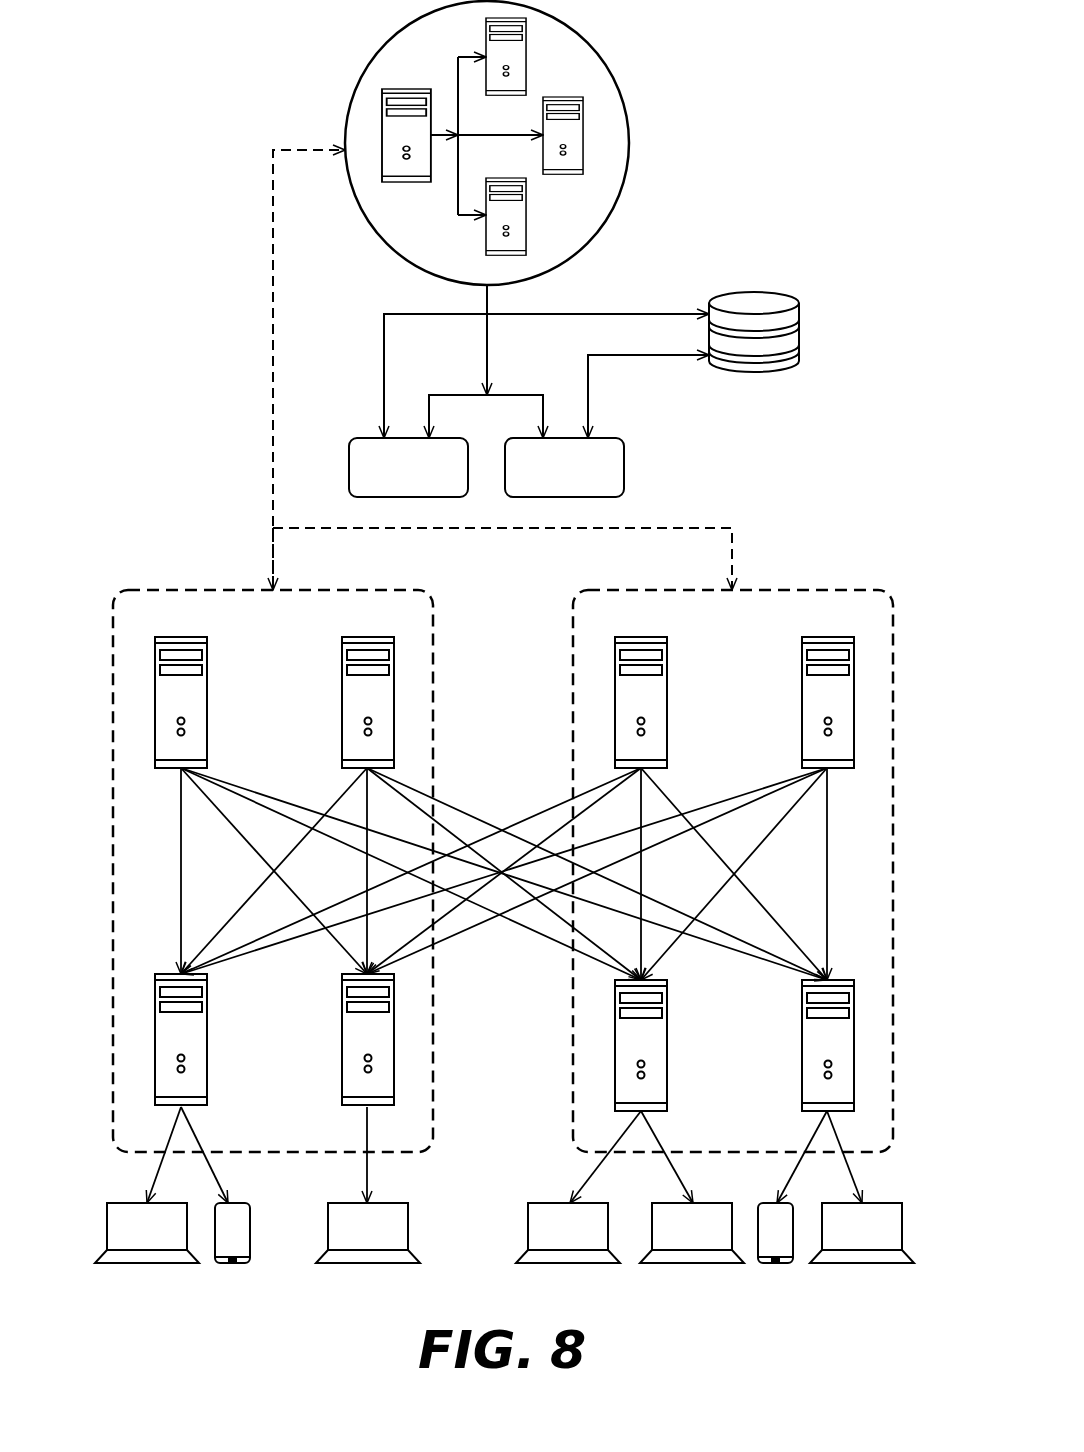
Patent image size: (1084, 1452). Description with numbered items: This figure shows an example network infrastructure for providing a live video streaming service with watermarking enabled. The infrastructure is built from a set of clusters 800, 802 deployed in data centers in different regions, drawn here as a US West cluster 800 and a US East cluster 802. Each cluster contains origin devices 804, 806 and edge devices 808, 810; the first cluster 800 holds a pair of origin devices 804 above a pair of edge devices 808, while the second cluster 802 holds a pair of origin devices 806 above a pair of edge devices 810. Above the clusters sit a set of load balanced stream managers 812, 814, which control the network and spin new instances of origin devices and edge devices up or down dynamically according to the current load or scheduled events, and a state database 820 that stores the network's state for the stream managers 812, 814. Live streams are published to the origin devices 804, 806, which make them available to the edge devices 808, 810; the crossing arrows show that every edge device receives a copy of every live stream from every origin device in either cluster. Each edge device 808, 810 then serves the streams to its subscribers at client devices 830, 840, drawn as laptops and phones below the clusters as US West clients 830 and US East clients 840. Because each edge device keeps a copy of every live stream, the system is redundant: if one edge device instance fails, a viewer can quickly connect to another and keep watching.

The cluster 800 is at (273, 839).
The cluster 802 is at (745, 840).
The origin devices 804 is at (342, 717).
The origin devices 806 is at (802, 717).
The edge devices 808 is at (342, 1057).
The edge devices 810 is at (802, 1060).
The stream manager 812 is at (376, 438).
The stream manager 814 is at (600, 438).
The database 820 is at (760, 292).
The client devices 830 is at (100, 1275).
The client devices 840 is at (907, 1275).